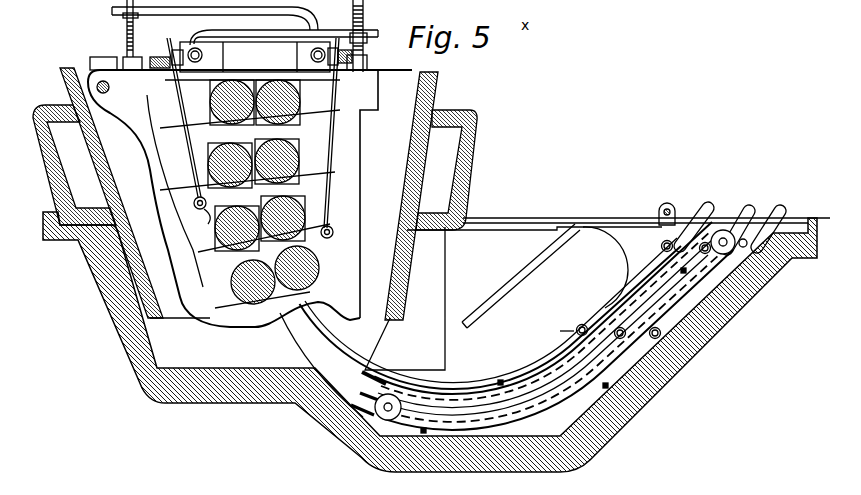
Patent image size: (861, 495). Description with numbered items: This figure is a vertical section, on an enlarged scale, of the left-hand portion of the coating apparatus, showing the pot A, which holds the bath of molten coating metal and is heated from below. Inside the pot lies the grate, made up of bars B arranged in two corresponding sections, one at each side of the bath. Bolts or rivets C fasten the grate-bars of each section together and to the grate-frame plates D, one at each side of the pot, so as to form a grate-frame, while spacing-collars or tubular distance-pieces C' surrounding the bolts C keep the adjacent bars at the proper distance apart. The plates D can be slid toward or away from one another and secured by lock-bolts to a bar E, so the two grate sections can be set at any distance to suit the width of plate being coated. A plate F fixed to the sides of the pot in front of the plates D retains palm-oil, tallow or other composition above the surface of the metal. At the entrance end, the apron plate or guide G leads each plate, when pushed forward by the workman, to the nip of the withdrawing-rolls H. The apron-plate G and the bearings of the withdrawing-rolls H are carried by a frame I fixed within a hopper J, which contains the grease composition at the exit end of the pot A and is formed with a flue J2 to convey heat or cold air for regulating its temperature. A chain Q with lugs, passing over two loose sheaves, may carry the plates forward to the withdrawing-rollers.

The pot A is at (430, 342).
The grate-bars B is at (560, 329).
The bolts C is at (635, 291).
The spacing-collars C' is at (627, 299).
The grate-frame plates D is at (618, 263).
The bar E is at (672, 205).
The plate F is at (521, 276).
The apron plate G is at (530, 309).
The withdrawing-rolls H is at (263, 192).
The frame I is at (250, 163).
The hopper J is at (252, 219).
The flue J2 is at (255, 167).
The chain Q is at (520, 378).